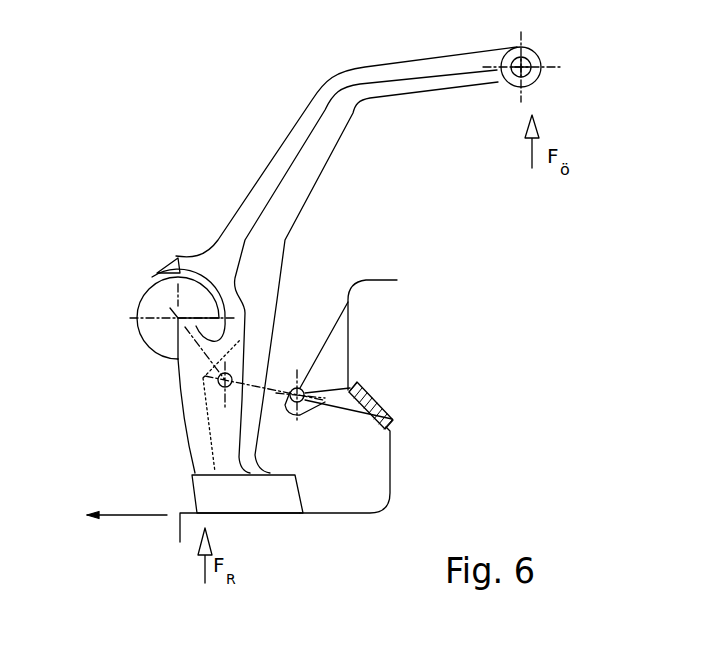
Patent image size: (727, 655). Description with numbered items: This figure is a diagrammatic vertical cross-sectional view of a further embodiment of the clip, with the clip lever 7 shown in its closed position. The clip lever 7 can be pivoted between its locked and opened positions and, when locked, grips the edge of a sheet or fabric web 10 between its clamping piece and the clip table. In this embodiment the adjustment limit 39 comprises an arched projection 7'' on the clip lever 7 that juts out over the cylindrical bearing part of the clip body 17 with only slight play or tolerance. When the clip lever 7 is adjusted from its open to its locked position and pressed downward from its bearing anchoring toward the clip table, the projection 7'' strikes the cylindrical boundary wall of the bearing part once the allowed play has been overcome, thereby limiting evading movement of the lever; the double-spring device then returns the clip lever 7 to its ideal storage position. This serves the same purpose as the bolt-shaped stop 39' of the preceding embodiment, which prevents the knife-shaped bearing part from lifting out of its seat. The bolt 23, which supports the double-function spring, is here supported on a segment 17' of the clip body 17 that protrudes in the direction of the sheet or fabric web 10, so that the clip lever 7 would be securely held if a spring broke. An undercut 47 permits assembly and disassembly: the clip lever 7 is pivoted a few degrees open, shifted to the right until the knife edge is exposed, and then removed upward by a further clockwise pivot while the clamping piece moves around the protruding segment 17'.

The clip lever 7 is at (307, 248).
The adjustment limit 39 is at (135, 211).
The stop 39' is at (136, 248).
The projection 7'' is at (112, 237).
The clip body 17 is at (440, 328).
The bolt 23 is at (305, 390).
The segment 17' is at (473, 417).
The undercut 47 is at (392, 462).
The sheet or fabric web 10 is at (127, 516).